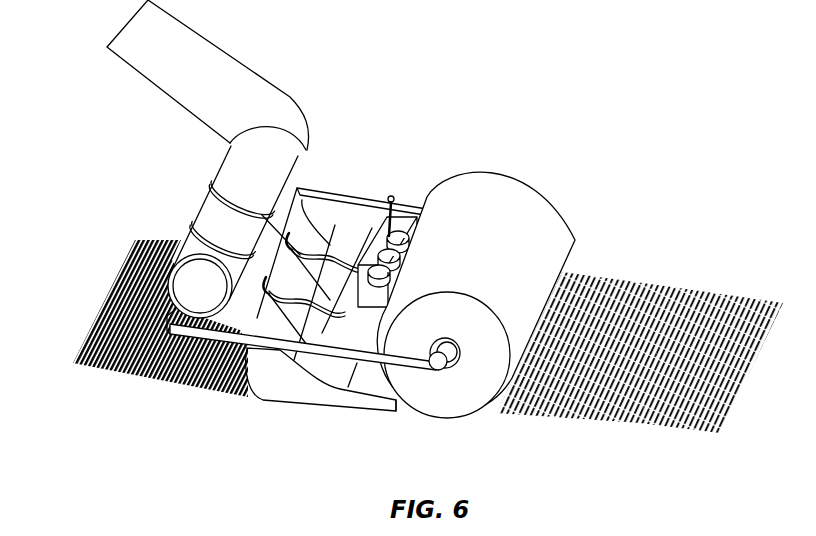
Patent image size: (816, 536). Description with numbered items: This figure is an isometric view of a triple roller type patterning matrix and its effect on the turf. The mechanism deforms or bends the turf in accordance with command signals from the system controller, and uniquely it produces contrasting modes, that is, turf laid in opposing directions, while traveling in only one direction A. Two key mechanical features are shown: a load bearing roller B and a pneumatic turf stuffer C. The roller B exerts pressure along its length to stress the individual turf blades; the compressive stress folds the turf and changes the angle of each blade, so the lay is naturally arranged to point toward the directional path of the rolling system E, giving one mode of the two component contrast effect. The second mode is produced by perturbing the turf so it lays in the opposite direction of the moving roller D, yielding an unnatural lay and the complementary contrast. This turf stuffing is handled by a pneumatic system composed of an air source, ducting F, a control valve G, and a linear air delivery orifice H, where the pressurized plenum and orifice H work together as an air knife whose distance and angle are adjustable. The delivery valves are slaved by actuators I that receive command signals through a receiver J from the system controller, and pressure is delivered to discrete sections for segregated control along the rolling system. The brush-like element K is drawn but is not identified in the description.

The ducting F is at (226, 80).
The load bearing roller B is at (528, 197).
The left brush K is at (129, 394).
The turf laid opposite to the moving roller D is at (532, 428).
The directional path of the rolling system E is at (618, 439).
The actuators I is at (314, 187).
The control valve G is at (317, 208).
The receiver J is at (394, 194).
The pneumatic turf stuffer C is at (279, 380).
The linear air delivery orifice H is at (402, 414).
The direction of travel A is at (290, 426).